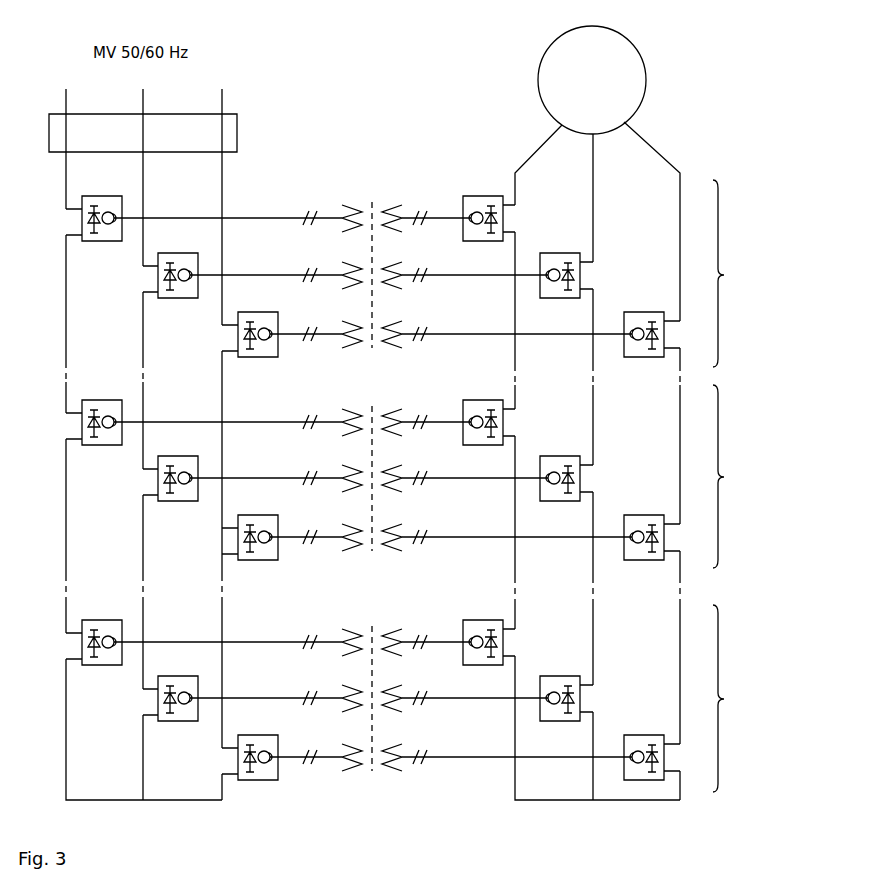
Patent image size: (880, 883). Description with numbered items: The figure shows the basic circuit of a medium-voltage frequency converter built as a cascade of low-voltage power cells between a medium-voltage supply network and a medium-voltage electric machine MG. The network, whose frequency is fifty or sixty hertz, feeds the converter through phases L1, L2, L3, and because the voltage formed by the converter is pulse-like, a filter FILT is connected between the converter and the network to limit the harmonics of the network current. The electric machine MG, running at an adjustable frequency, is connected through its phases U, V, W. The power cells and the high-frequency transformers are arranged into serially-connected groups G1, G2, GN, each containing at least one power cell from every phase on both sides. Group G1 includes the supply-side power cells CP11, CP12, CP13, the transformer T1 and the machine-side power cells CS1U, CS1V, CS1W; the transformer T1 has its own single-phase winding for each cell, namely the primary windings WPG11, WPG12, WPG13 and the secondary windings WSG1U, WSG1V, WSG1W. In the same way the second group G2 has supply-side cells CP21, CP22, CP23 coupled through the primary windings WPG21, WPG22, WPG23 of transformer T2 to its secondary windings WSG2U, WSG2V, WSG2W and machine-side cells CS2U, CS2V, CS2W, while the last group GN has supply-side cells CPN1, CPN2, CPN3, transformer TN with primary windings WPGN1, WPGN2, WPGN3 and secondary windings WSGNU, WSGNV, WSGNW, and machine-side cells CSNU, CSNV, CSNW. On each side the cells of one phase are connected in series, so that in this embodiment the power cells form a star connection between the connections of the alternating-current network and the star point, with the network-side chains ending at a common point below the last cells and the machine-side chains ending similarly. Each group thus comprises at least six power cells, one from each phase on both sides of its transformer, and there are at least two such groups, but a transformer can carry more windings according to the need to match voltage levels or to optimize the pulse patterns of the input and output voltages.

The filter FILT is at (143, 133).
The phase L1 of the medium-voltage network L1 is at (144, 444).
The phase L2 of the medium-voltage network L2 is at (156, 444).
The phase L3 of the medium-voltage network L3 is at (235, 444).
The medium-voltage electric machine MG is at (592, 80).
The phase U of the electric machine U is at (597, 461).
The phase V of the electric machine V is at (602, 467).
The phase W of the electric machine W is at (652, 454).
The transformer of the first group T1 is at (369, 261).
The transformer of the second group T2 is at (369, 464).
The transformer of the N-th group TN is at (370, 684).
The first group G1 is at (734, 273).
The second group G2 is at (734, 476).
The N-th group GN is at (734, 698).
The power cell on the supply network side CP11 is at (94, 208).
The power cell on the supply network side CP12 is at (170, 265).
The power cell on the supply network side CP13 is at (250, 324).
The power cell on the supply network side CP21 is at (94, 412).
The power cell on the supply network side CP22 is at (170, 468).
The power cell on the supply network side CP23 is at (250, 527).
The power cell on the supply network side CPN1 is at (94, 632).
The power cell on the supply network side CPN2 is at (170, 688).
The power cell on the supply network side CPN3 is at (250, 747).
The power cell on the electric machine side CS1U is at (489, 208).
The power cell on the electric machine side CS1V is at (566, 265).
The power cell on the electric machine side CS1W is at (652, 324).
The power cell on the electric machine side CS2U is at (489, 412).
The power cell on the electric machine side CS2V is at (566, 468).
The power cell on the electric machine side CS2W is at (652, 527).
The power cell on the electric machine side CSNU is at (489, 632).
The power cell on the electric machine side CSNV is at (566, 688).
The power cell on the electric machine side CSNW is at (652, 747).
The primary winding WPG11 is at (242, 212).
The primary winding WPG12 is at (280, 269).
The primary winding WPG13 is at (320, 328).
The primary winding WPG21 is at (242, 416).
The primary winding WPG22 is at (280, 472).
The primary winding WPG23 is at (320, 531).
The primary winding WPGN1 is at (242, 636).
The primary winding WPGN2 is at (280, 692).
The primary winding WPGN3 is at (320, 751).
The secondary winding WSG1U is at (422, 212).
The secondary winding WSG1V is at (461, 269).
The secondary winding WSG1W is at (503, 328).
The secondary winding WSG2U is at (422, 416).
The secondary winding WSG2V is at (461, 472).
The secondary winding WSG2W is at (503, 531).
The secondary winding WSGNU is at (422, 636).
The secondary winding WSGNV is at (461, 692).
The secondary winding WSGNW is at (503, 751).